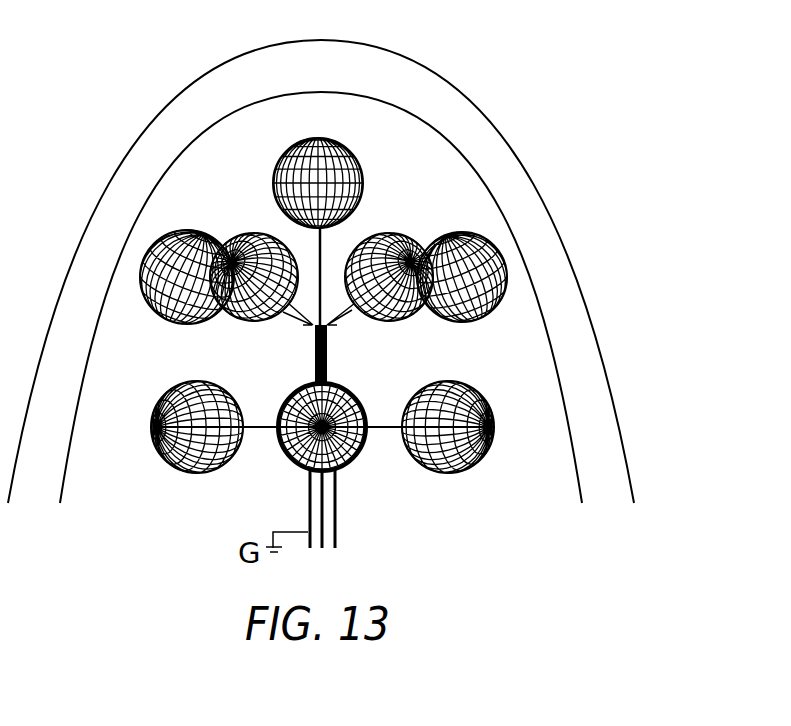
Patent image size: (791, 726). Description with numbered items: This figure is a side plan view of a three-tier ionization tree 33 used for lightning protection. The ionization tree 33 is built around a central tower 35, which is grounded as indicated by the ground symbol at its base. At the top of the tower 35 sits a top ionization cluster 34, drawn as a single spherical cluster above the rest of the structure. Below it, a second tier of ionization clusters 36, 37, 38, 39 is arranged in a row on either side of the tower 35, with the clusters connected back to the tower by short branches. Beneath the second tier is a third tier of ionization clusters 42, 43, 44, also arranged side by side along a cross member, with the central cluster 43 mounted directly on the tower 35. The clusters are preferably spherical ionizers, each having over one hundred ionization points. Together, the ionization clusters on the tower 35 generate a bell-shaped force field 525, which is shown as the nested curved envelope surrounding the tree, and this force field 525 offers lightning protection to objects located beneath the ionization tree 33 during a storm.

The force field 525 is at (533, 182).
The ionization tree 33 is at (437, 203).
The top ionization cluster 34 is at (363, 178).
The tower 35 is at (337, 513).
The ionization cluster 36 is at (167, 323).
The ionization cluster 37 is at (255, 327).
The ionization cluster 38 is at (403, 323).
The ionization cluster 39 is at (480, 320).
The ionization cluster 42 is at (185, 473).
The ionization cluster 43 is at (302, 468).
The ionization cluster 44 is at (457, 477).